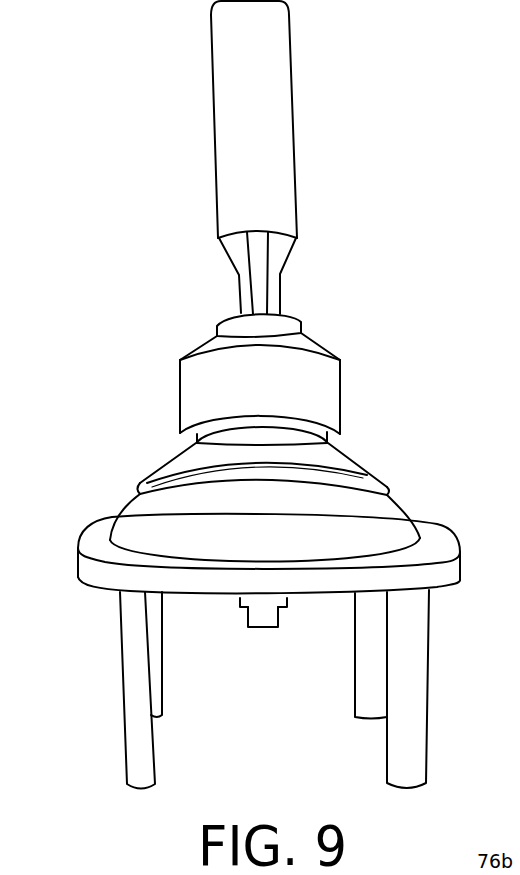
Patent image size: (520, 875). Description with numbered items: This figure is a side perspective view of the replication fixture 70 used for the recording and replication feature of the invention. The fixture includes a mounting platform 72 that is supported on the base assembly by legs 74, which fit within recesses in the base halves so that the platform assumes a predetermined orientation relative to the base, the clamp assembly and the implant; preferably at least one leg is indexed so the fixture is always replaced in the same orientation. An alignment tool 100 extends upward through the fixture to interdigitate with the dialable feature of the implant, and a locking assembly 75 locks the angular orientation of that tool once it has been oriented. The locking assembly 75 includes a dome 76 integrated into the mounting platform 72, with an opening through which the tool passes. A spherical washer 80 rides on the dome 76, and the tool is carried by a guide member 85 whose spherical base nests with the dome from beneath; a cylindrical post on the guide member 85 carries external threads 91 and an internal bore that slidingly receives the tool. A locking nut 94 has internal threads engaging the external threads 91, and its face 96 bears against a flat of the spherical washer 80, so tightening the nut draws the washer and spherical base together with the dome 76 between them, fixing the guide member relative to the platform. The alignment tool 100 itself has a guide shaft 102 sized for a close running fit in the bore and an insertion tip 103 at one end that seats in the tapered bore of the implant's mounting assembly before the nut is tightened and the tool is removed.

The alignment tool 100 is at (293, 177).
The external threads 91 is at (217, 330).
The guide member 85 is at (299, 318).
The locking nut 94 is at (178, 378).
The locking assembly 75 is at (279, 364).
The face 96 is at (187, 443).
The spherical washer 80 is at (167, 463).
The dome 76 is at (130, 502).
The replication fixture 70 is at (285, 628).
The mounting platform 72 is at (445, 592).
The legs 74 is at (150, 772).
The guide shaft 102 is at (243, 607).
The insertion tip 103 is at (263, 628).